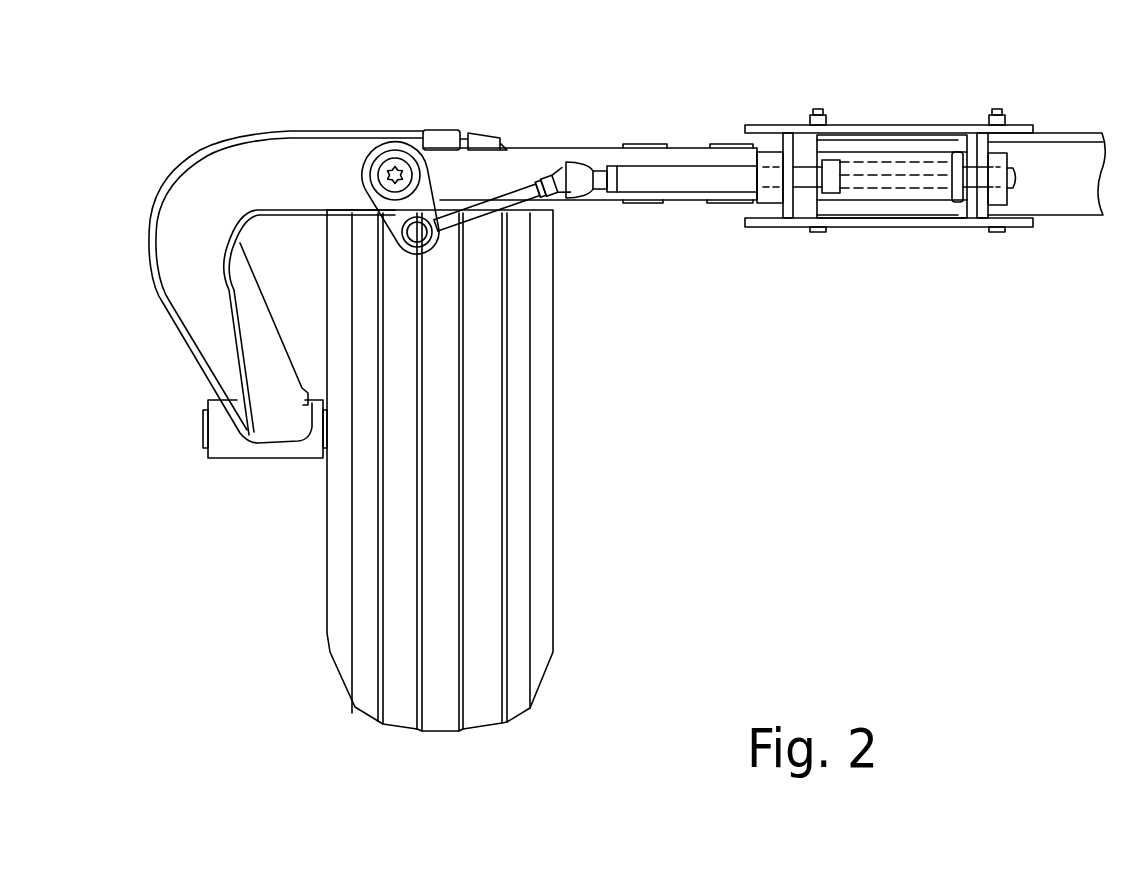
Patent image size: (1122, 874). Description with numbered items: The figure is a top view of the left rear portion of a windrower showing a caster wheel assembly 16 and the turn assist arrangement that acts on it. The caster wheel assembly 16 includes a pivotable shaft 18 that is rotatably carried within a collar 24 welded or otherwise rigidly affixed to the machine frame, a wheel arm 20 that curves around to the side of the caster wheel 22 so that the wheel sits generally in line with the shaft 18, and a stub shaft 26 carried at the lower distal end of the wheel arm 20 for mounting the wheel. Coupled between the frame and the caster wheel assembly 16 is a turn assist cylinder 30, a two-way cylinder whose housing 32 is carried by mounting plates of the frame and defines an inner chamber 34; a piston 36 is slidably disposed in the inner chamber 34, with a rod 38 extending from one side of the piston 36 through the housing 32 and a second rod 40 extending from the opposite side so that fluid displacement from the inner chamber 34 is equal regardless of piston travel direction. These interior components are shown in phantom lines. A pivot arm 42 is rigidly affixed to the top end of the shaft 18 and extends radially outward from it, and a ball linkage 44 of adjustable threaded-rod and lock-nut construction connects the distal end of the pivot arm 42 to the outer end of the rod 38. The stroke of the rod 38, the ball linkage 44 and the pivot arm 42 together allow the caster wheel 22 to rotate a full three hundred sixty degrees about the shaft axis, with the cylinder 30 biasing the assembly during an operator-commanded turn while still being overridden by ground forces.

The caster wheel assembly 16 is at (740, 415).
The pivotable shaft 18 is at (395, 172).
The wheel arm 20 is at (285, 130).
The caster wheel 22 is at (553, 590).
The collar 24 is at (358, 162).
The stub shaft 26 is at (203, 426).
The turn assist cylinder 30 is at (712, 131).
The housing 32 is at (760, 210).
The inner chamber 34 is at (912, 192).
The piston 36 is at (833, 193).
The rod 38 is at (673, 177).
The second rod 40 is at (1017, 178).
The pivot arm 42 is at (473, 150).
The ball linkage 44 is at (512, 190).